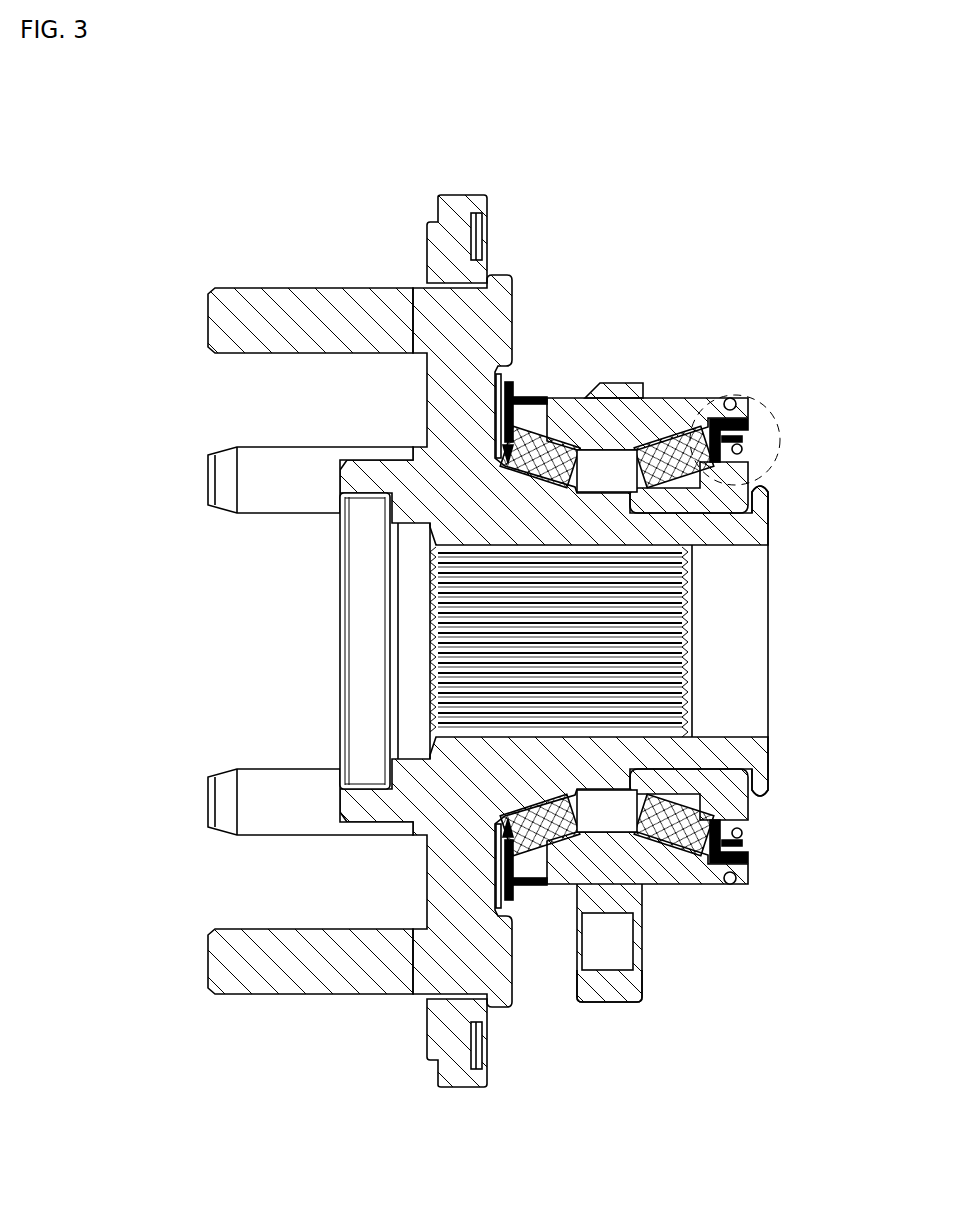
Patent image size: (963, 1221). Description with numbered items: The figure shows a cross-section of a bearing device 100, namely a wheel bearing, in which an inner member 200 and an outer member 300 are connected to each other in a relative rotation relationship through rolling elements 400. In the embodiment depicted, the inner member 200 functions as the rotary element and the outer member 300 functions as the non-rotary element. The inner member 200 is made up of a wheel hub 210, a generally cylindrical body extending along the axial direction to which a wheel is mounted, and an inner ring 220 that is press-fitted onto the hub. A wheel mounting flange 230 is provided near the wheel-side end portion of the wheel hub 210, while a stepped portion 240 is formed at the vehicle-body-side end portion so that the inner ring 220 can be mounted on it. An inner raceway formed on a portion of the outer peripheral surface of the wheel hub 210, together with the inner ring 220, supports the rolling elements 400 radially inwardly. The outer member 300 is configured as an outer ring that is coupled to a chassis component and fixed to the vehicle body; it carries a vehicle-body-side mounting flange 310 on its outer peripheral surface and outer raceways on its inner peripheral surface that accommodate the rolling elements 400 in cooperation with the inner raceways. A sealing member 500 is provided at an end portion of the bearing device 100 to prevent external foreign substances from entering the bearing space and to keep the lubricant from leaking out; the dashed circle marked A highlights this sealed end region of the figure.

The bearing device 100 is at (203, 99).
The inner member 200 is at (737, 552).
The wheel hub 210 is at (442, 404).
The inner ring 220 is at (735, 801).
The wheel mounting flange 230 is at (465, 195).
The stepped portion 240 is at (776, 518).
The outer member 300 is at (687, 897).
The vehicle-body-side mounting flange 310 is at (613, 1003).
The rolling elements 400 is at (668, 468).
The sealing member 500 is at (744, 440).
The detail region A is at (752, 418).